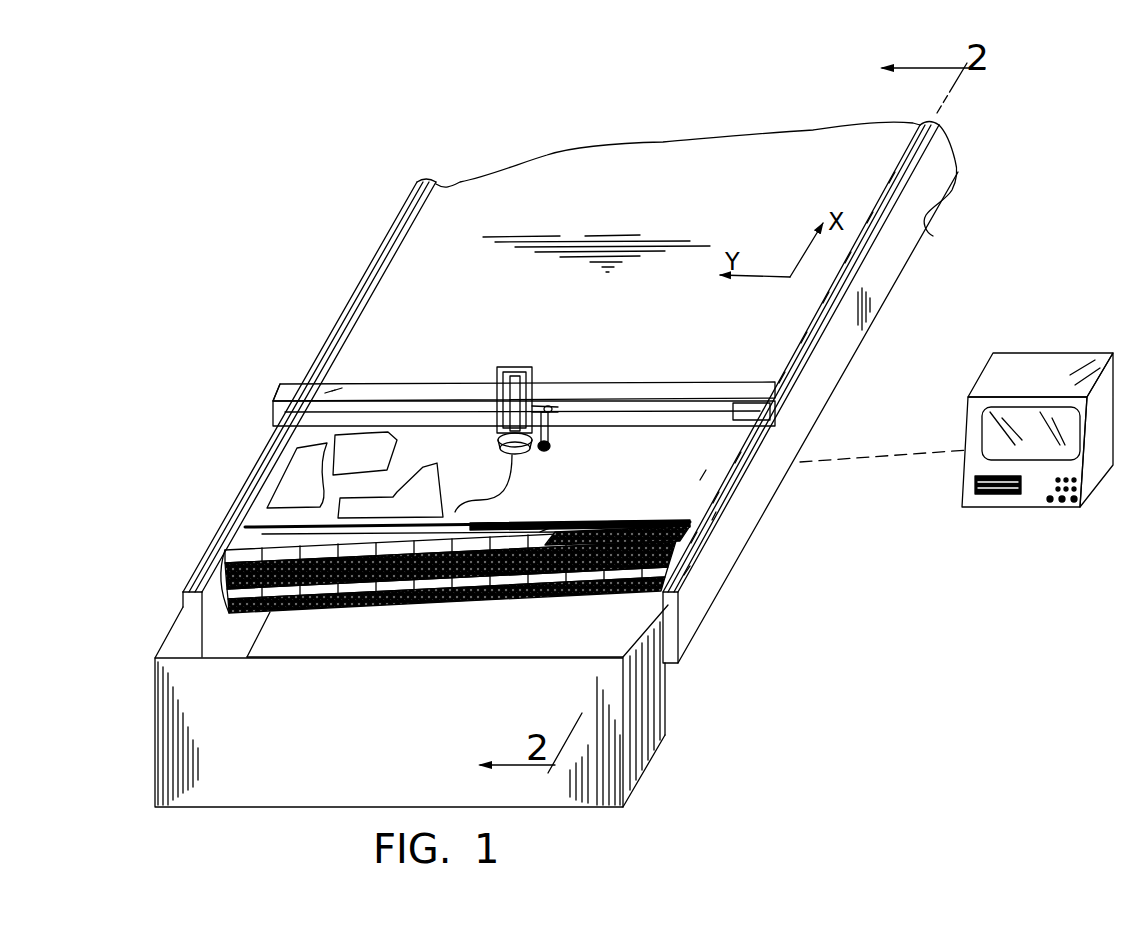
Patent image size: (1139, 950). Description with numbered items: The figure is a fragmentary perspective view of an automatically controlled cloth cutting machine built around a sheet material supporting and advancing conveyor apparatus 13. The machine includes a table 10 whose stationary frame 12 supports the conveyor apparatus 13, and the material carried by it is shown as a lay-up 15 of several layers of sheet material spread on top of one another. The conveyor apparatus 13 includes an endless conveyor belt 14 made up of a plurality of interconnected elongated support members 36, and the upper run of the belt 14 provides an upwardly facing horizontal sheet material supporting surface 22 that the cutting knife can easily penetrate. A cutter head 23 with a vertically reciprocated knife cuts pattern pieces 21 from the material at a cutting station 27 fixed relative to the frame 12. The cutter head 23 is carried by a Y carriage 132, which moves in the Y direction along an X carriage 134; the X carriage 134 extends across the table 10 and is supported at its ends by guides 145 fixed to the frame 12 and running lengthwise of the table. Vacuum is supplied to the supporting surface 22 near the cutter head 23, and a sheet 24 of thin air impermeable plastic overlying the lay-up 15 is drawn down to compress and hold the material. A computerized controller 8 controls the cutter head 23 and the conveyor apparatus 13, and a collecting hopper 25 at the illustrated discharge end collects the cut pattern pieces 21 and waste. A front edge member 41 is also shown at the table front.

The computerized controller 8 is at (968, 415).
The table 10 is at (340, 292).
The stationary frame 12 is at (858, 355).
The sheet material supporting and advancing conveyor apparatus 13 is at (300, 484).
The endless conveyor belt 14 is at (362, 612).
The lay-up 15 is at (705, 517).
The pattern pieces 21 is at (382, 460).
The sheet material supporting surface 22 is at (557, 530).
The cutter head 23 is at (497, 365).
The sheet of thin air impermeable plastic 24 is at (620, 510).
The collecting hopper 25 is at (467, 645).
The cutting station 27 is at (560, 446).
The support members 36 is at (690, 567).
The table front edge member 41 is at (687, 467).
The Y carriage 132 is at (513, 367).
The X carriage 134 is at (684, 386).
The guides 145 is at (248, 528).